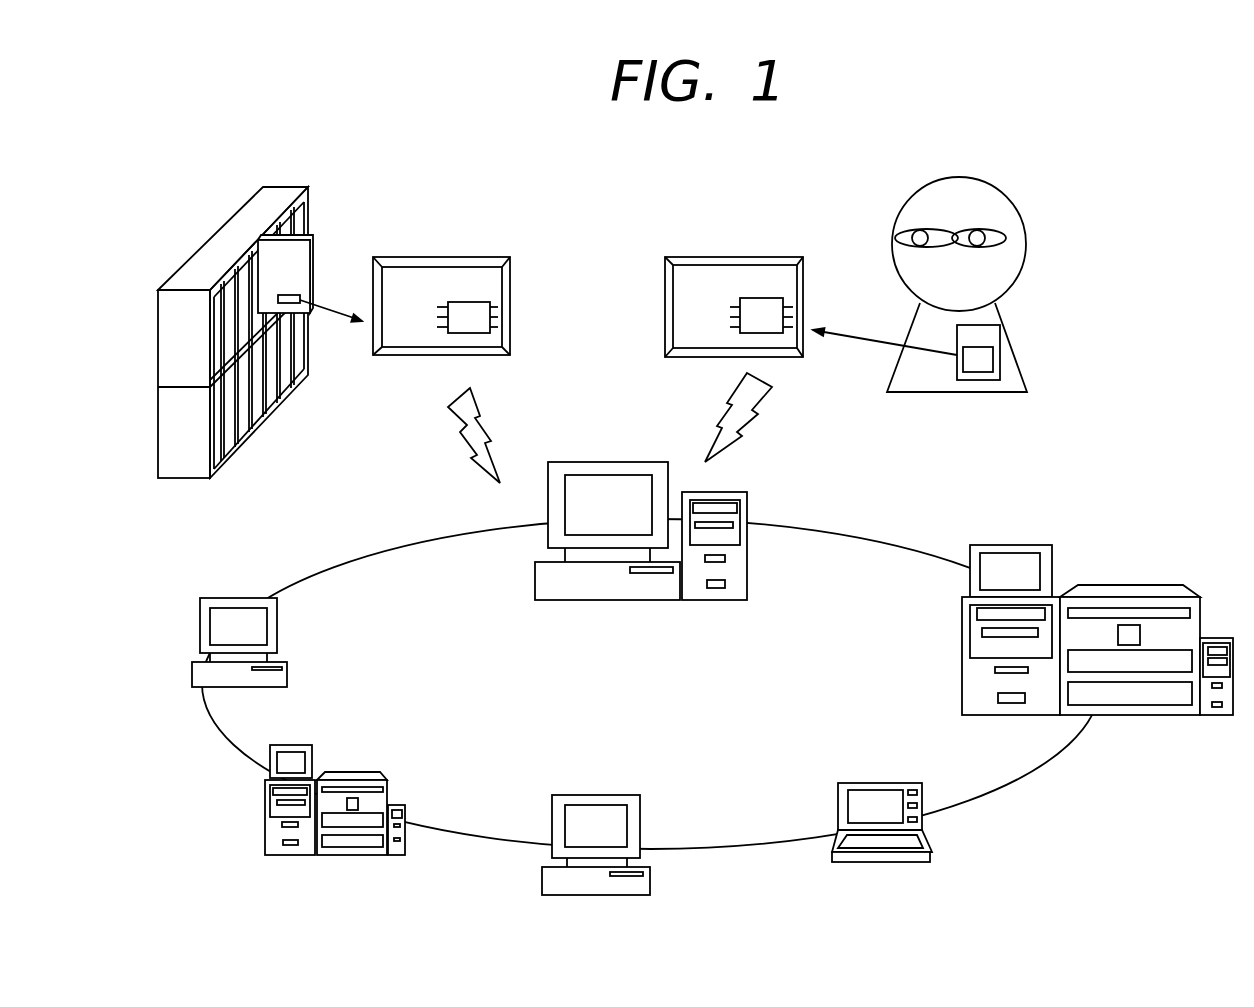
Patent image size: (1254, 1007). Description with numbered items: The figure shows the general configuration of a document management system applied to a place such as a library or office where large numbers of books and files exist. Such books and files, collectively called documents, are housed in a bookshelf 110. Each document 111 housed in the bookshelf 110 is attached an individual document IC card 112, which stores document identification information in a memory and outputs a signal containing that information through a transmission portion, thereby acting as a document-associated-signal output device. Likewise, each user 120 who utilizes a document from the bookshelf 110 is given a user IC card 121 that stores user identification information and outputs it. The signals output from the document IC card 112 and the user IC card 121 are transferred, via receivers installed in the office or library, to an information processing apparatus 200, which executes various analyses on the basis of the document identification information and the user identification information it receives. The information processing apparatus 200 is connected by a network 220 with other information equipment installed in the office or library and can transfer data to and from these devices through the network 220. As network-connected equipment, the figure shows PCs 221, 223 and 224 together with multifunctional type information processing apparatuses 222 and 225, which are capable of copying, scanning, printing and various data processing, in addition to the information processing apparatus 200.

The bookshelf 110 is at (222, 226).
The document 111 is at (302, 266).
The document IC card 112 is at (455, 258).
The user 120 is at (1027, 233).
The user IC card 121 is at (750, 256).
The information processing apparatus 200 is at (612, 461).
The network 220 is at (382, 551).
The PC 221 is at (227, 598).
The multifunctional type information processing apparatus 222 is at (357, 772).
The PC 223 is at (607, 795).
The PC 224 is at (888, 783).
The multifunctional type information processing apparatus 225 is at (1148, 585).